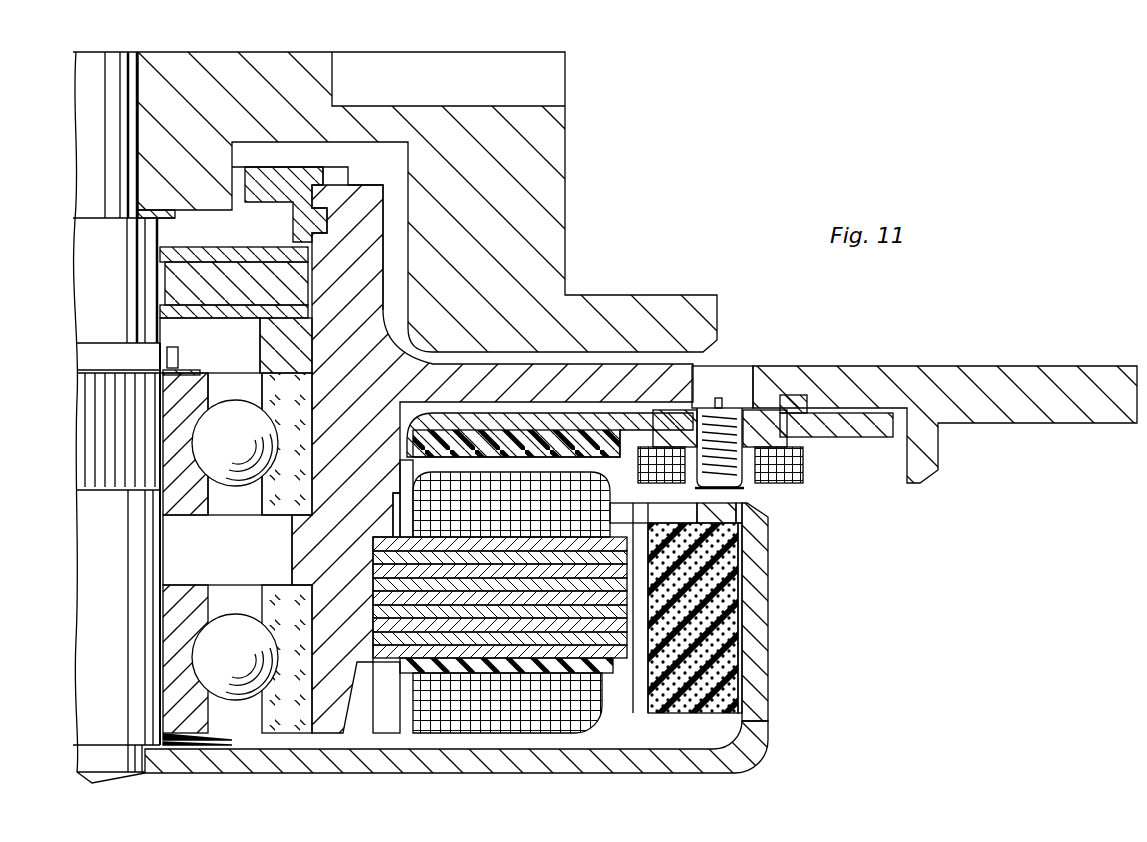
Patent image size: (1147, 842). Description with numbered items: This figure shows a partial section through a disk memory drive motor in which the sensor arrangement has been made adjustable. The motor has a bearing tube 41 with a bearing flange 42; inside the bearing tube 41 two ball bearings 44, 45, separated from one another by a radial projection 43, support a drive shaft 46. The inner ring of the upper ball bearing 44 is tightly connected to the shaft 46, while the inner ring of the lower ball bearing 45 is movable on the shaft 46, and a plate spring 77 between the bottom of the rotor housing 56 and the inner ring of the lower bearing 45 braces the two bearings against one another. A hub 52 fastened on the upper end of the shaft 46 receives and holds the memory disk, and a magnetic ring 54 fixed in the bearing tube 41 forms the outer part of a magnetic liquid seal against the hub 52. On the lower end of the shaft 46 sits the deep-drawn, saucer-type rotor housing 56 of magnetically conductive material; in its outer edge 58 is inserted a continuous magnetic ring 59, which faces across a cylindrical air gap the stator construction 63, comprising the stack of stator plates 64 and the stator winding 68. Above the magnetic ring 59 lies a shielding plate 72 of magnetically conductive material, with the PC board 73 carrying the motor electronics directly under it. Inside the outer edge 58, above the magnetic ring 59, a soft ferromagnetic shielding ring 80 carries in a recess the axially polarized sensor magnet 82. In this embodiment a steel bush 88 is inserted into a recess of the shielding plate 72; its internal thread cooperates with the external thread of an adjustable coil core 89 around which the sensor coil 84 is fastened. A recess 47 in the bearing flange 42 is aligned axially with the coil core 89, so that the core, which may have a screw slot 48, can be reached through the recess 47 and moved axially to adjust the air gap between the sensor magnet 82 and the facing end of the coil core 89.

The bearing tube 41 is at (335, 700).
The bearing flange 42 is at (1052, 410).
The radial projection 43 is at (305, 540).
The upper ball bearing 44 is at (178, 450).
The lower ball bearing 45 is at (178, 632).
The drive shaft 46 is at (90, 263).
The recess 47 is at (708, 376).
The screw slot 48 is at (727, 407).
The hub 52 is at (565, 193).
The magnetic ring 54 is at (178, 290).
The rotor housing 56 is at (487, 760).
The outer edge 58 is at (760, 647).
The magnetic ring 59 is at (737, 690).
The stator construction 63 is at (602, 720).
The stack of stator plates 64 is at (740, 618).
The stator winding 68 is at (577, 725).
The plate 72 is at (887, 437).
The PC board 73 is at (597, 452).
The plate spring 77 is at (225, 746).
The shielding ring 80 is at (758, 537).
The sensor magnet 82 is at (758, 513).
The sensor coil 84 is at (805, 462).
The steel bush 88 is at (772, 415).
The coil core 89 is at (735, 490).